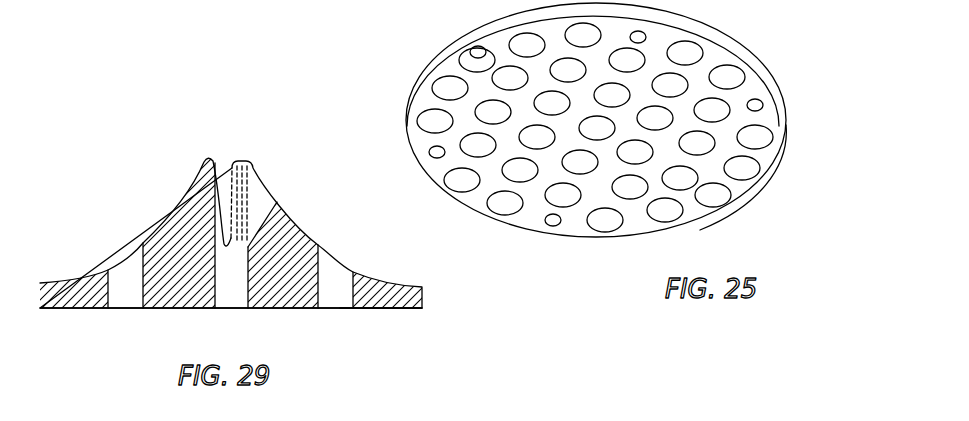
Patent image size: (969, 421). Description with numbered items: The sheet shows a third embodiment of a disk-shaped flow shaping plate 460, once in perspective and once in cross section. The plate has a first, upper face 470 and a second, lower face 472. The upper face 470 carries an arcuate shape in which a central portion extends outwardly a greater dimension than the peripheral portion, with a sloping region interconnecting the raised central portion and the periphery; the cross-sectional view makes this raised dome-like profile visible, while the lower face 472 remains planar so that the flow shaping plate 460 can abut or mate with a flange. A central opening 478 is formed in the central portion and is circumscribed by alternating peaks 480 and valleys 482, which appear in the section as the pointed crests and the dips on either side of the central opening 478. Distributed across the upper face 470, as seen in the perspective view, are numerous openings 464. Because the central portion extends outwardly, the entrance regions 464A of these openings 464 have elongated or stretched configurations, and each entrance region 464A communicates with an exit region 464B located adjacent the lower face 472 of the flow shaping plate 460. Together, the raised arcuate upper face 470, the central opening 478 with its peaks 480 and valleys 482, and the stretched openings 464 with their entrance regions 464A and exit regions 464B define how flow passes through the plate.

In FIG. 29, the flow shaping plate 460 is at (427, 291).
In FIG. 25, the flow shaping plate 460 is at (765, 72).
In FIG. 29, the openings 464 is at (333, 278).
In FIG. 25, the openings 464 is at (762, 133).
In FIG. 29, the entrance regions 464A is at (356, 271).
In FIG. 29, the exit regions 464B is at (347, 308).
In FIG. 29, the first, upper face 470 is at (58, 281).
In FIG. 29, the second, lower face 472 is at (72, 310).
In FIG. 25, the second, lower face 472 is at (743, 187).
In FIG. 29, the central opening 478 is at (237, 212).
In FIG. 29, the peaks 480 is at (207, 160).
In FIG. 29, the valleys 482 is at (276, 195).